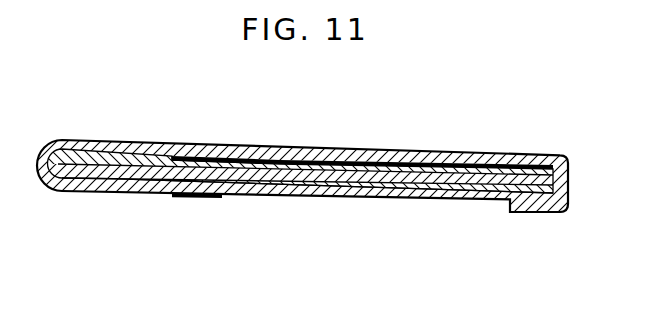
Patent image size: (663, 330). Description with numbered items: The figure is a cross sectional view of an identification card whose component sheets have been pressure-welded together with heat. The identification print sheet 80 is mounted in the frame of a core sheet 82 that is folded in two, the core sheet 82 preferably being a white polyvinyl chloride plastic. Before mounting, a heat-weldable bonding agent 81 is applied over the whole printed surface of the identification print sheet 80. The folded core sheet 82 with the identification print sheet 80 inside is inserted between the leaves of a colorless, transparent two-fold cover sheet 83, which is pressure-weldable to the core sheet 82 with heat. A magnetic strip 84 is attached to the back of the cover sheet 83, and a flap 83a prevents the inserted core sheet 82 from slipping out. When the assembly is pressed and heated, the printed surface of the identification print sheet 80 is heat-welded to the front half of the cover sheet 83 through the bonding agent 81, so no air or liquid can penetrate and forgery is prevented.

The identification print sheet 80 is at (202, 158).
The heat-weldable bonding agent 81 is at (330, 163).
The core sheet 82 is at (137, 172).
The cover sheet 83 is at (483, 156).
The magnetic strip 84 is at (199, 199).
The flap 83a is at (530, 213).